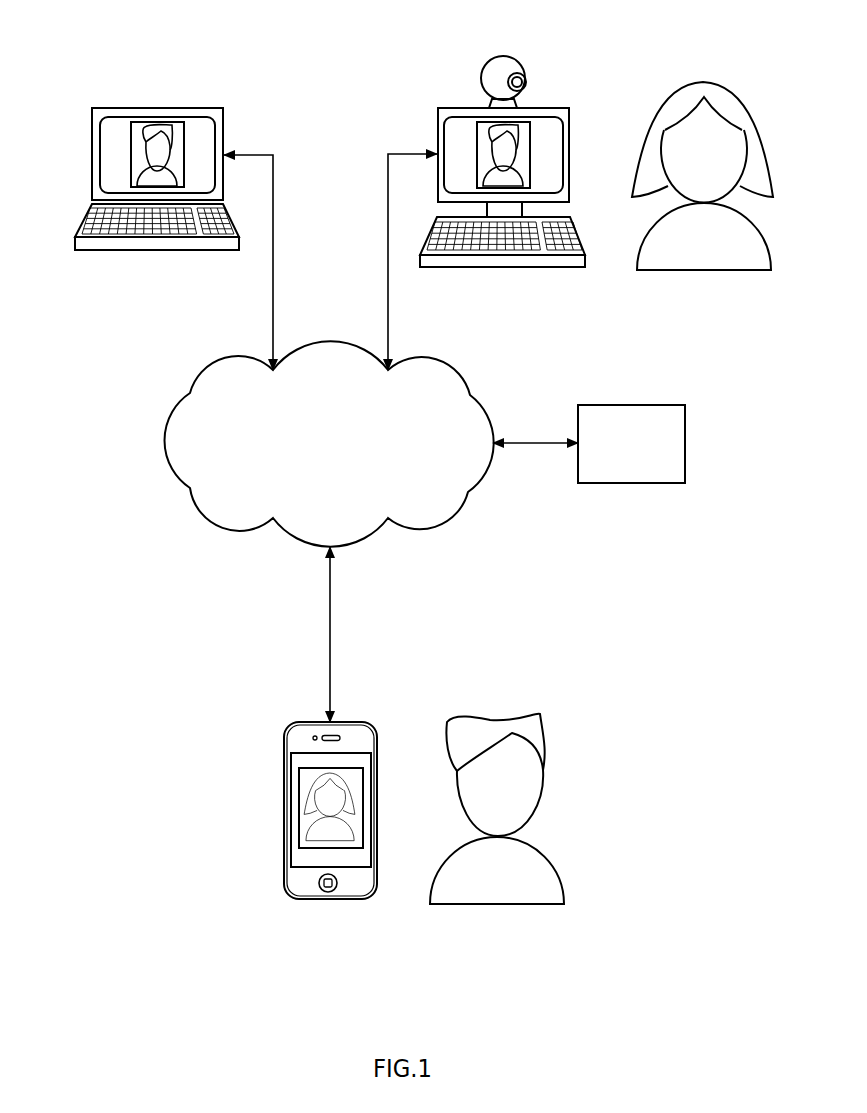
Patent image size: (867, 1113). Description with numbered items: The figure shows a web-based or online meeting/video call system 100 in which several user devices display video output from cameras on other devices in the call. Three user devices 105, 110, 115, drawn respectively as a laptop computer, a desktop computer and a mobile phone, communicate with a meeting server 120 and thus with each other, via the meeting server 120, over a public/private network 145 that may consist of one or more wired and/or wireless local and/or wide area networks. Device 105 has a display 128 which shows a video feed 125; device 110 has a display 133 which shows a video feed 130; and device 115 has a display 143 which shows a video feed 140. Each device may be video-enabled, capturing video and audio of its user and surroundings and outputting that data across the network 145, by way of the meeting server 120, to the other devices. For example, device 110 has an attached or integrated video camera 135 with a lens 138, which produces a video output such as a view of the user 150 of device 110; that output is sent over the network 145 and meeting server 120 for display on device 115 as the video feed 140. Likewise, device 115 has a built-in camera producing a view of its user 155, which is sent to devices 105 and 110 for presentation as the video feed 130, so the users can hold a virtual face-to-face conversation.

The video call system 100 is at (342, 42).
The user device 105 is at (138, 156).
The user device 110 is at (505, 133).
The user device 115 is at (297, 800).
The meeting server 120 is at (633, 483).
The video feed 125 is at (131, 133).
The display 128 is at (197, 137).
The video feed 130 is at (476, 137).
The display 133 is at (455, 148).
The video camera 135 is at (522, 54).
The lens 138 is at (526, 87).
The video feed 140 is at (299, 790).
The display 143 is at (301, 860).
The network 145 is at (345, 455).
The user 150 is at (695, 272).
The user 155 is at (507, 906).